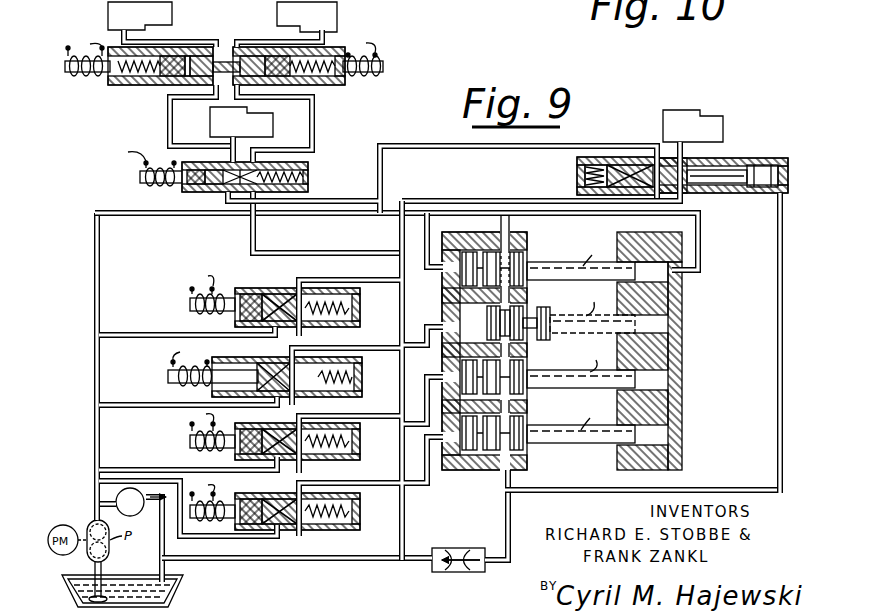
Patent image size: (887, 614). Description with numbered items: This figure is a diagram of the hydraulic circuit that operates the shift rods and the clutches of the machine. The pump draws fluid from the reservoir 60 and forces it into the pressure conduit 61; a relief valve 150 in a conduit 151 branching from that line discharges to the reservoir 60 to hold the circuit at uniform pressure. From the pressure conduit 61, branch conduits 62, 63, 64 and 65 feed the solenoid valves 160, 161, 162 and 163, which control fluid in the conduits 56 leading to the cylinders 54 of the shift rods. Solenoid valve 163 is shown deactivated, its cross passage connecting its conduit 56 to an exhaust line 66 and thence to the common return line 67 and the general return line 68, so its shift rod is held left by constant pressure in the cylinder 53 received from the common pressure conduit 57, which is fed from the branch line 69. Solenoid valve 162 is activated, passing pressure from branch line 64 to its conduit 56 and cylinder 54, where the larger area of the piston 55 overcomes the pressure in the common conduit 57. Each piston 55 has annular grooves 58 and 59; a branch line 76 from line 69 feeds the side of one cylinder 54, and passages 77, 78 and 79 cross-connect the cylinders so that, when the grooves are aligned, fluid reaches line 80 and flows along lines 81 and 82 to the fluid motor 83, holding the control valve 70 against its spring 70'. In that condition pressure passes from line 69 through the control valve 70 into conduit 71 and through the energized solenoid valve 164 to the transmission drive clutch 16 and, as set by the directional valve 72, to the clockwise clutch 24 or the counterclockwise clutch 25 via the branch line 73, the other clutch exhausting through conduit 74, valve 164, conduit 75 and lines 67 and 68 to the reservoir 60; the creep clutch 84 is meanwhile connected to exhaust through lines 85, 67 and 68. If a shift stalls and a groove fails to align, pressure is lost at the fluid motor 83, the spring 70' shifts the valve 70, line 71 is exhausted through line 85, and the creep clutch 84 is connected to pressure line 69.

The transmission drive clutch 16 is at (208, 122).
The clockwise directional drive clutch 24 is at (104, 14).
The counterclockwise directional drive clutch 25 is at (342, 16).
The cylinder 53 is at (655, 272).
The cylinder 54 is at (441, 306).
The piston 55 is at (549, 310).
The conduit 56 is at (322, 281).
The common pressure conduit 57 is at (668, 308).
The annular groove 58 is at (518, 250).
The annular groove 59 is at (477, 250).
The reservoir 60 is at (175, 590).
The pressure conduit 61 is at (94, 266).
The branch conduit 62 is at (162, 480).
The branch conduit 63 is at (126, 468).
The branch conduit 64 is at (110, 403).
The branch conduit 65 is at (125, 333).
The exhaust line 66 is at (371, 333).
The common return line 67 is at (405, 270).
The general return line 68 is at (250, 563).
The branch line 69 is at (701, 254).
The control valve 70 is at (659, 198).
The spring 70' is at (605, 155).
The conduit 71 is at (328, 200).
The directional valve 72 is at (226, 37).
The branch line 73 is at (168, 117).
The conduit 74 is at (316, 117).
The conduit 75 is at (272, 250).
The branch line 76 is at (511, 232).
The passage 77 is at (512, 295).
The passage 78 is at (512, 353).
The passage 79 is at (512, 405).
The line 80 is at (512, 476).
The line 81 is at (594, 491).
The line 82 is at (777, 342).
The fluid motor 83 is at (758, 160).
The creep clutch 84 is at (688, 108).
The exhaust line 85 is at (450, 201).
The relief valve 150 is at (116, 498).
The conduit 151 is at (160, 553).
The solenoid valve 160 is at (287, 538).
The solenoid valve 161 is at (184, 441).
The solenoid valve 162 is at (170, 377).
The solenoid valve 163 is at (247, 283).
The solenoid valve 164 is at (313, 178).